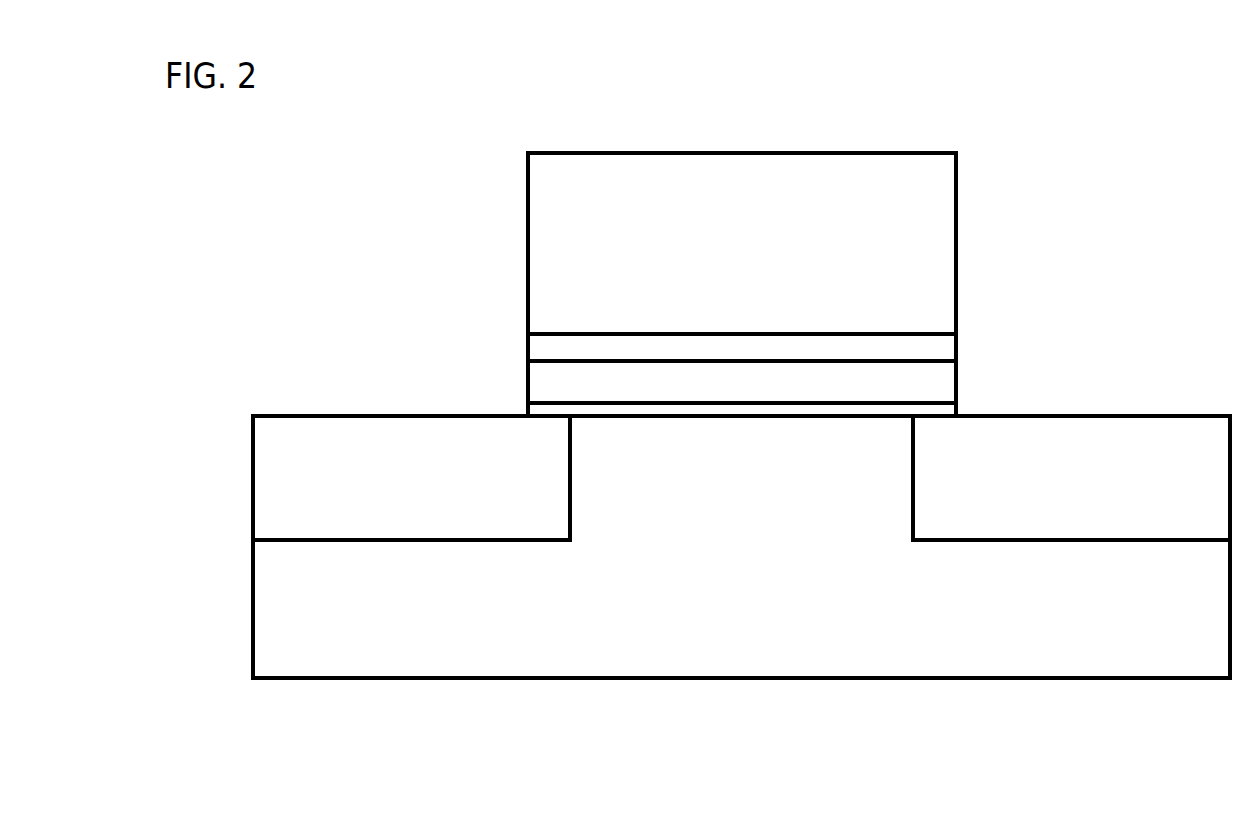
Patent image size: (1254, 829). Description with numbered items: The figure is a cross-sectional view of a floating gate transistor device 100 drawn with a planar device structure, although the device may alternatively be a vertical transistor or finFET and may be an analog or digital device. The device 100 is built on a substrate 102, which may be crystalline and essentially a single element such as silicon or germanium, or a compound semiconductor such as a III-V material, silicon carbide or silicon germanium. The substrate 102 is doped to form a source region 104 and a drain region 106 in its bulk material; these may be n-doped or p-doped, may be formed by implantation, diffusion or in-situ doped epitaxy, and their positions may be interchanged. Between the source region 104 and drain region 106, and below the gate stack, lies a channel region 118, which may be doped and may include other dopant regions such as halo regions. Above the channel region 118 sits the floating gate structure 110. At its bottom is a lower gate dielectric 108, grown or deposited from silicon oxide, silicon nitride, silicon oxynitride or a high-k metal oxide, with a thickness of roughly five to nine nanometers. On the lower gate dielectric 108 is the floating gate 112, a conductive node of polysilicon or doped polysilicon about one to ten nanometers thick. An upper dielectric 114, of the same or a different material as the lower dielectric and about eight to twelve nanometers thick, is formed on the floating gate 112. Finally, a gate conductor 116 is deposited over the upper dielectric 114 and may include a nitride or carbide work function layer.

The floating gate transistor device 100 is at (1157, 93).
The substrate 102 is at (1126, 619).
The source region 104 is at (349, 453).
The drain region 106 is at (1127, 467).
The lower gate dielectric 108 is at (537, 407).
The floating gate structure 110 is at (856, 150).
The floating gate 112 is at (928, 390).
The upper dielectric 114 is at (940, 347).
The gate conductor 116 is at (918, 268).
The channel region 118 is at (750, 454).